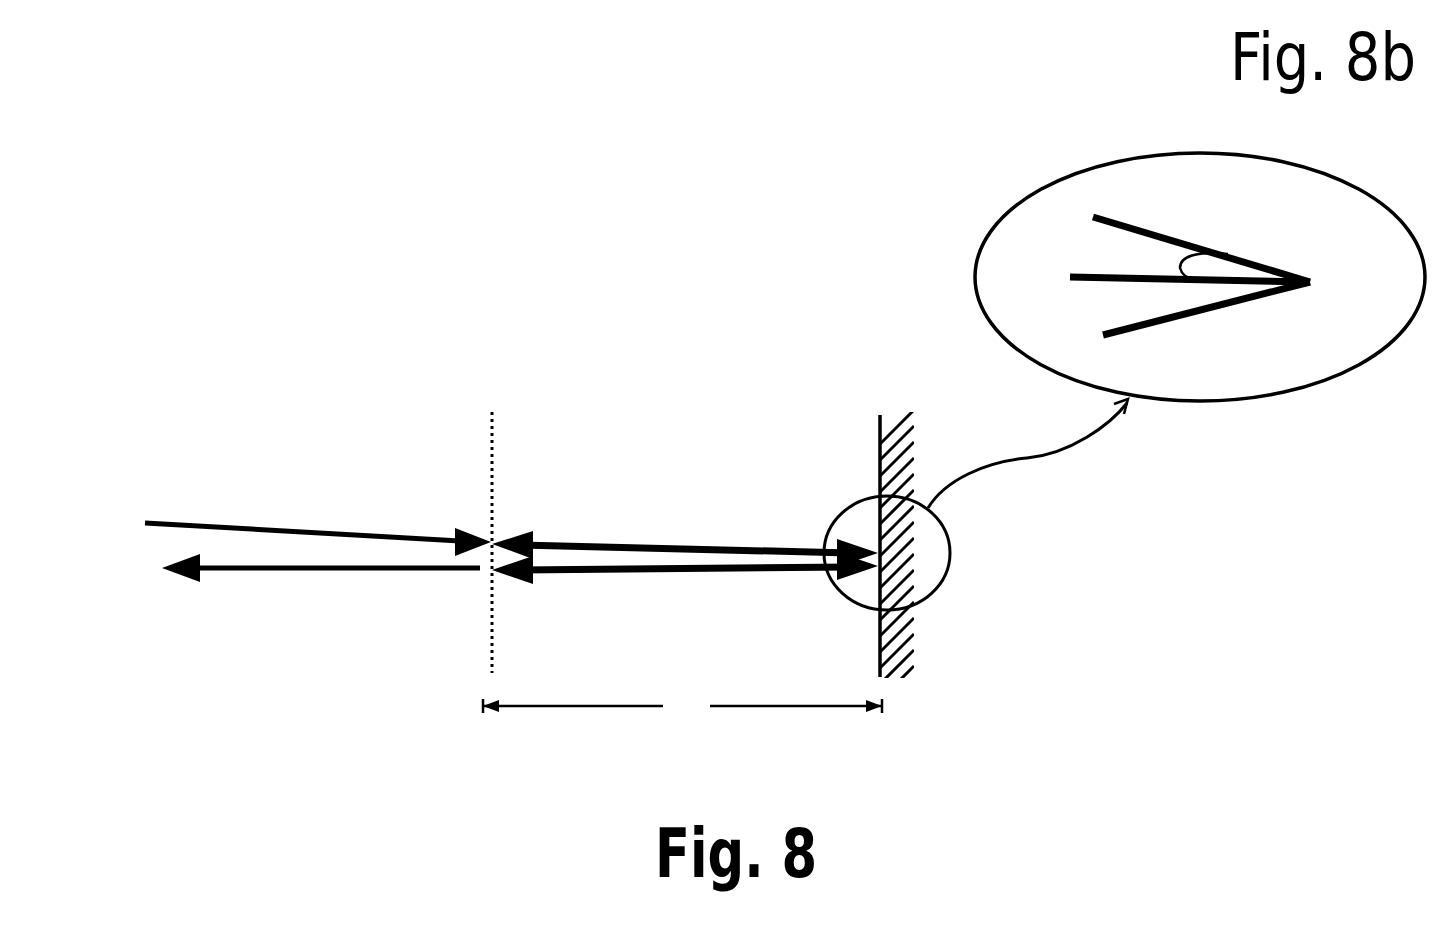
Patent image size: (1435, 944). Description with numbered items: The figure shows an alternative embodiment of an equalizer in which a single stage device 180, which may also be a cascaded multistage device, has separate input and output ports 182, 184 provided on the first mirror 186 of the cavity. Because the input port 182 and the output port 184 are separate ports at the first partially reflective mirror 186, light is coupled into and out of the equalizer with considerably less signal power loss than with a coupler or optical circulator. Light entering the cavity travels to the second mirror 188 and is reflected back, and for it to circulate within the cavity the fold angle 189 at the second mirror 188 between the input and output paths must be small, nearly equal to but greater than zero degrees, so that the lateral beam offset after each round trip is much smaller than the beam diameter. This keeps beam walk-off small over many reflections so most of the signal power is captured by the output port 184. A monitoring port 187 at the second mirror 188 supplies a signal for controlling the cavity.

In FIG. 8, the single stage device 180 is at (579, 347).
In FIG. 8, the input port 182 is at (318, 518).
In FIG. 8, the output port 184 is at (308, 585).
In FIG. 8, the first mirror 186 is at (490, 651).
In FIG. 8, the monitoring port 187 is at (880, 579).
In FIG. 8, the second mirror 188 is at (877, 675).
In FIG. 8b, the fold angle 189 is at (1230, 253).